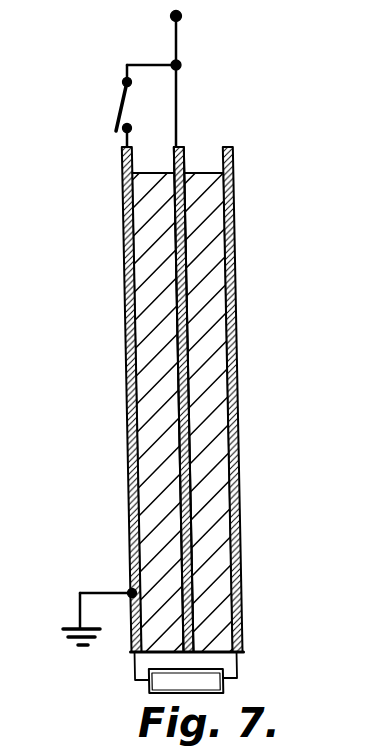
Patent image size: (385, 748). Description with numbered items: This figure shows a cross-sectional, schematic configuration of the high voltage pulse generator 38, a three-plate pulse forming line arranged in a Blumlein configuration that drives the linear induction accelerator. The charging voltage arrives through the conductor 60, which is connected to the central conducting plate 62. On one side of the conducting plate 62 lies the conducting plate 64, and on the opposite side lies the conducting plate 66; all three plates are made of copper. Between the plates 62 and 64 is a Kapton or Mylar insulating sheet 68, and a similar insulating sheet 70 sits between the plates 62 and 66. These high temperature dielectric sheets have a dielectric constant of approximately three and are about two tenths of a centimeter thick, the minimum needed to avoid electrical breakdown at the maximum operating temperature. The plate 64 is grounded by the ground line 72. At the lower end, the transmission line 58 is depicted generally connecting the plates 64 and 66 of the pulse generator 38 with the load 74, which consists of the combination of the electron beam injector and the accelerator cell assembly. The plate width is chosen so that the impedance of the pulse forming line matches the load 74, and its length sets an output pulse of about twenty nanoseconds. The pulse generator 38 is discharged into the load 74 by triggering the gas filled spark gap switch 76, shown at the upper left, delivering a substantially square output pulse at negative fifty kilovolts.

The high voltage pulse generator 38 is at (238, 323).
The transmission line 58 is at (225, 664).
The conductor 60 is at (176, 42).
The conducting plate 62 is at (172, 388).
The conducting plate 64 is at (121, 458).
The conducting plate 66 is at (231, 438).
The insulating sheet 68 is at (148, 528).
The insulating sheet 70 is at (205, 520).
The ground line 72 is at (80, 605).
The load 74 is at (139, 687).
The spark gap switch 76 is at (118, 103).